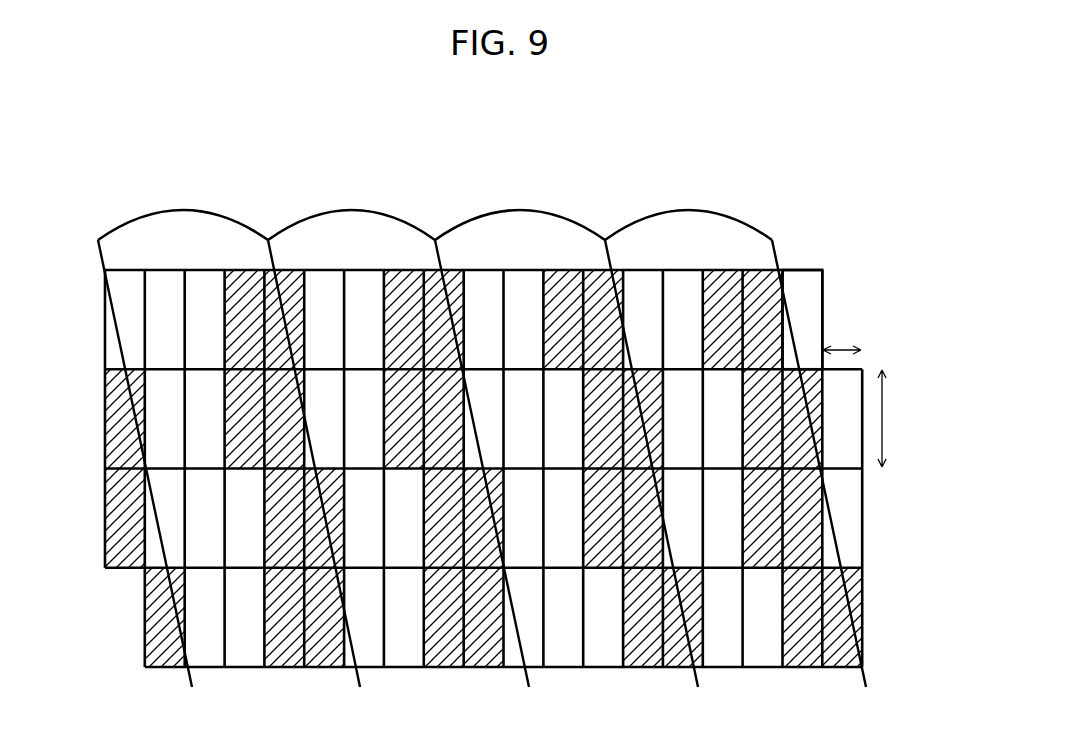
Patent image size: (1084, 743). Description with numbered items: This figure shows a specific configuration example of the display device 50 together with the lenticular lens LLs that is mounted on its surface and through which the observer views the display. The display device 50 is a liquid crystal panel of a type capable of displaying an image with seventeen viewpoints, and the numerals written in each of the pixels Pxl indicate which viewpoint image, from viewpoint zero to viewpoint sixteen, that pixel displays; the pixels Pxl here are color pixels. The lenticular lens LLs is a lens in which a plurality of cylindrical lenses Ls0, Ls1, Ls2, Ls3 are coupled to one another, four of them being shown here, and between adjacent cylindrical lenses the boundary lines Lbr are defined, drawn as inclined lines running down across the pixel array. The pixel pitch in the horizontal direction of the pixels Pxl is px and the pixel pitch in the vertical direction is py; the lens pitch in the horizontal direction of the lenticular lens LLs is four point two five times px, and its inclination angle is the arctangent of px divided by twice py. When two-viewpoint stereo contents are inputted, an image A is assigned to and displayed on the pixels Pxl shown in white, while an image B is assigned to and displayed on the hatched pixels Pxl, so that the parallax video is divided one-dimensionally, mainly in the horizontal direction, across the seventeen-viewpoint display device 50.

The display device 50 is at (499, 429).
The pixels Pxl is at (802, 278).
The lenticular lens LLs is at (435, 172).
The cylindrical lens Ls0 is at (174, 212).
The cylindrical lens Ls1 is at (350, 212).
The cylindrical lens Ls2 is at (513, 212).
The cylindrical lens Ls3 is at (686, 212).
The boundary lines Lbr is at (188, 677).
The pixel pitch in the horizontal direction px is at (842, 335).
The pixel pitch in the vertical direction py is at (898, 418).